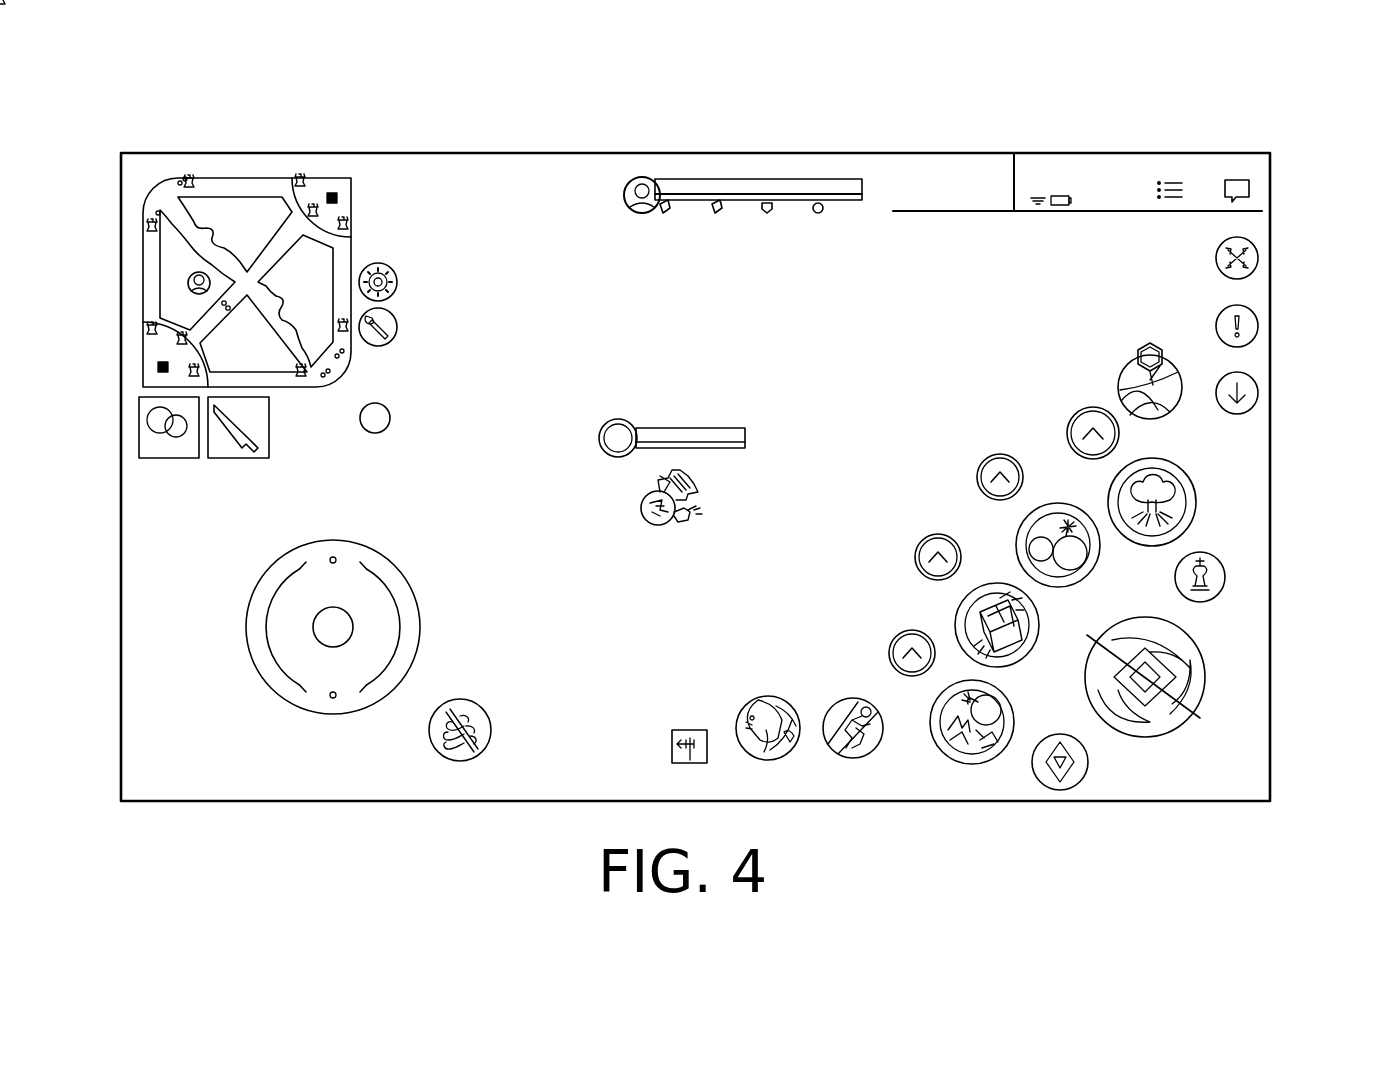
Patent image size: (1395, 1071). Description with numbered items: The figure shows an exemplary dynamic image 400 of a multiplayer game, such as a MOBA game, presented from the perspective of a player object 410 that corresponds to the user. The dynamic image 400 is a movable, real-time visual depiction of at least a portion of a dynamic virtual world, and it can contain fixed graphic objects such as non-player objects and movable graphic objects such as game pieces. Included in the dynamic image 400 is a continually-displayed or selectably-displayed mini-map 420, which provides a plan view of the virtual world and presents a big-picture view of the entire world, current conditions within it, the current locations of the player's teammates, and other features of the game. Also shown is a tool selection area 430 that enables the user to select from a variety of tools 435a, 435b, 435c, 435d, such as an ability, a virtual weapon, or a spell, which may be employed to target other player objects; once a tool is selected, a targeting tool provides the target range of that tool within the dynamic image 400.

The dynamic image 400 is at (1321, 122).
The player object 410 is at (640, 508).
The mini-map 420 is at (150, 265).
The tool selection area 430 is at (1203, 465).
The tool 435a is at (1192, 526).
The tool 435b is at (1059, 503).
The tool 435c is at (955, 613).
The tool 435d is at (975, 764).